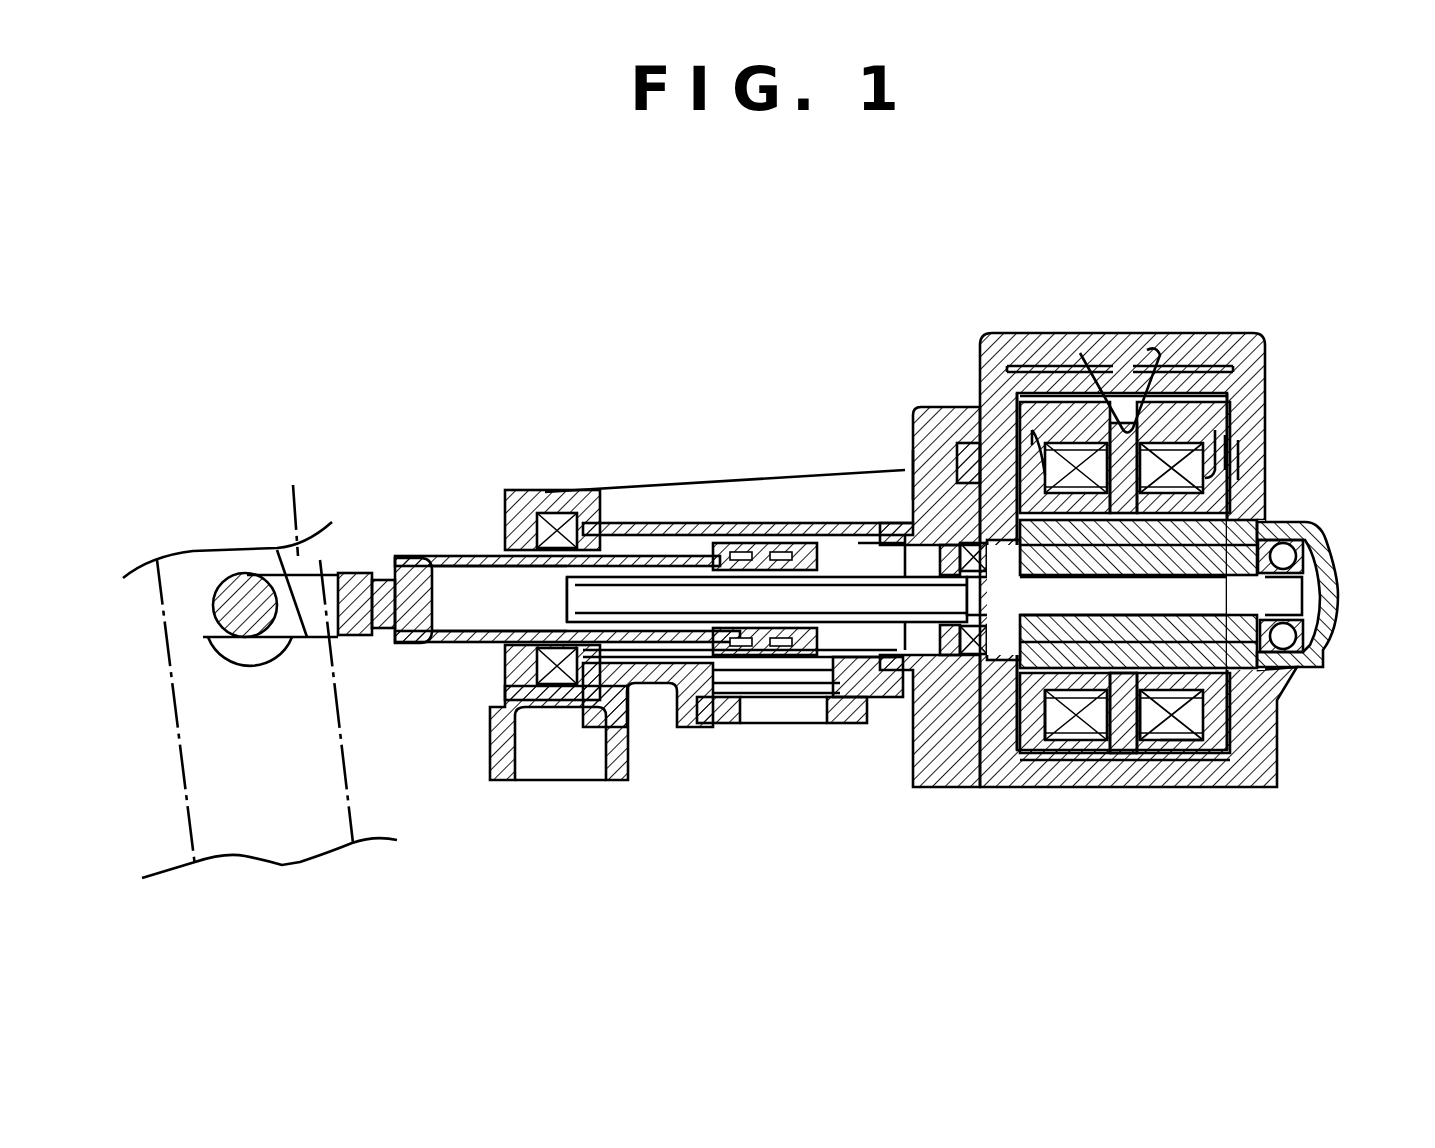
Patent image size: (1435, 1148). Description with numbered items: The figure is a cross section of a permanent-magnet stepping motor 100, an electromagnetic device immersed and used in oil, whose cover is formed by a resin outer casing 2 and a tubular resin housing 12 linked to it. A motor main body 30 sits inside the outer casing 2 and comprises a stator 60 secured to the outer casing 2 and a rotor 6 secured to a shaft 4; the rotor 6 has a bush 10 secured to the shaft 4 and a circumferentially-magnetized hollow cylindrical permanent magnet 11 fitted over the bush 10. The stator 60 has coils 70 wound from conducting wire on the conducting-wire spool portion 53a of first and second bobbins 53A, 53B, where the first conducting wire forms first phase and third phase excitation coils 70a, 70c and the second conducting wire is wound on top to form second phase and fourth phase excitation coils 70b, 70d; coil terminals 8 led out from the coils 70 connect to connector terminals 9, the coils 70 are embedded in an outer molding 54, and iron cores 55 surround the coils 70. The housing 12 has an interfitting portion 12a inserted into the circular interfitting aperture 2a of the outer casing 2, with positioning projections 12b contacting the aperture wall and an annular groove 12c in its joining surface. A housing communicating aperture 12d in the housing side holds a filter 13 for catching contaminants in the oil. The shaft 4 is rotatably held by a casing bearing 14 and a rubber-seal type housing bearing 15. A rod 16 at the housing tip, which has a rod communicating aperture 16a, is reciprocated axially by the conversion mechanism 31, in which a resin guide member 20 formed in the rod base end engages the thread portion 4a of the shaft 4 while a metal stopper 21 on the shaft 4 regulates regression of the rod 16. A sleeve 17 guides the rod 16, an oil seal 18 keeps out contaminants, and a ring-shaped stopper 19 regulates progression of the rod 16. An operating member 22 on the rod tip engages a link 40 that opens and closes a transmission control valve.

The stepping motor 100 is at (1355, 291).
The outer casing 2 is at (1265, 352).
The interfitting aperture 2a is at (960, 450).
The shaft 4 is at (1270, 600).
The thread portion 4a is at (858, 575).
The rotor 6 is at (1326, 560).
The coil terminals 8 is at (1108, 400).
The connector terminals 9 is at (1190, 400).
The bush 10 is at (1295, 700).
The permanent magnet 11 is at (1297, 740).
The housing 12 is at (543, 488).
The interfitting portion 12a is at (940, 405).
The positioning projections 12b is at (945, 758).
The annular groove 12c is at (928, 410).
The housing communicating aperture 12d is at (795, 703).
The filter 13 is at (767, 695).
The casing bearing 14 is at (1312, 520).
The housing bearing 15 is at (978, 660).
The rod 16 is at (440, 556).
The rod communicating aperture 16a is at (688, 558).
The sleeve 17 is at (506, 664).
The oil seal 18 is at (556, 690).
The stopper 19 is at (572, 700).
The guide member 20 is at (795, 523).
The stopper 21 is at (897, 490).
The operating member 22 is at (352, 572).
The motor main body 30 is at (1265, 420).
The conversion mechanism 31 is at (716, 541).
The link 40 is at (300, 540).
The first bobbin 53A is at (1195, 773).
The second bobbin 53B is at (1060, 735).
The conducting-wire spool portion 53a is at (1190, 787).
The outer molding 54 is at (1088, 750).
The cores 55 is at (1130, 790).
The stator 60 is at (1177, 768).
The coils 70 is at (1262, 462).
The first phase excitation coil 70a is at (1197, 368).
The second phase excitation coil 70b is at (1213, 388).
The third phase excitation coil 70c is at (1020, 362).
The fourth phase excitation coil 70d is at (1050, 392).